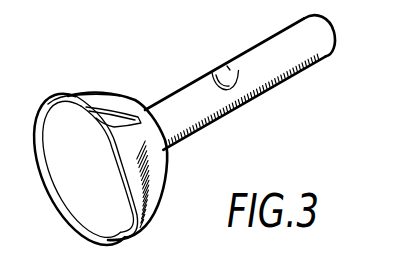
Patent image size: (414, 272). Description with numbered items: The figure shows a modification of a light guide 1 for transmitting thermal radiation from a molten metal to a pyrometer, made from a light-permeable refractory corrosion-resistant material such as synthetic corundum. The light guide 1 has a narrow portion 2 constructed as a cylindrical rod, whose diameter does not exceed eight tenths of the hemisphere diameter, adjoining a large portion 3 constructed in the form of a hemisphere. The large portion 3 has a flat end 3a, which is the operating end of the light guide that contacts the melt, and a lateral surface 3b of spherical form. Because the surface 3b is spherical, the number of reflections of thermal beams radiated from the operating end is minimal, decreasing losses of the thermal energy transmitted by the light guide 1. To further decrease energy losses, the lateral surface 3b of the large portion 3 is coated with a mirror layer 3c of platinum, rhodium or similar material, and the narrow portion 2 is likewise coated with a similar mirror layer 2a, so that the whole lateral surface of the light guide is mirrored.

The light guide 1 is at (170, 156).
The narrow portion 2 is at (218, 72).
The mirror layer on narrow portion 2a is at (248, 60).
The large portion 3 is at (47, 100).
The flat end 3a is at (73, 197).
The lateral surface 3b is at (119, 114).
The mirror layer 3c is at (89, 94).